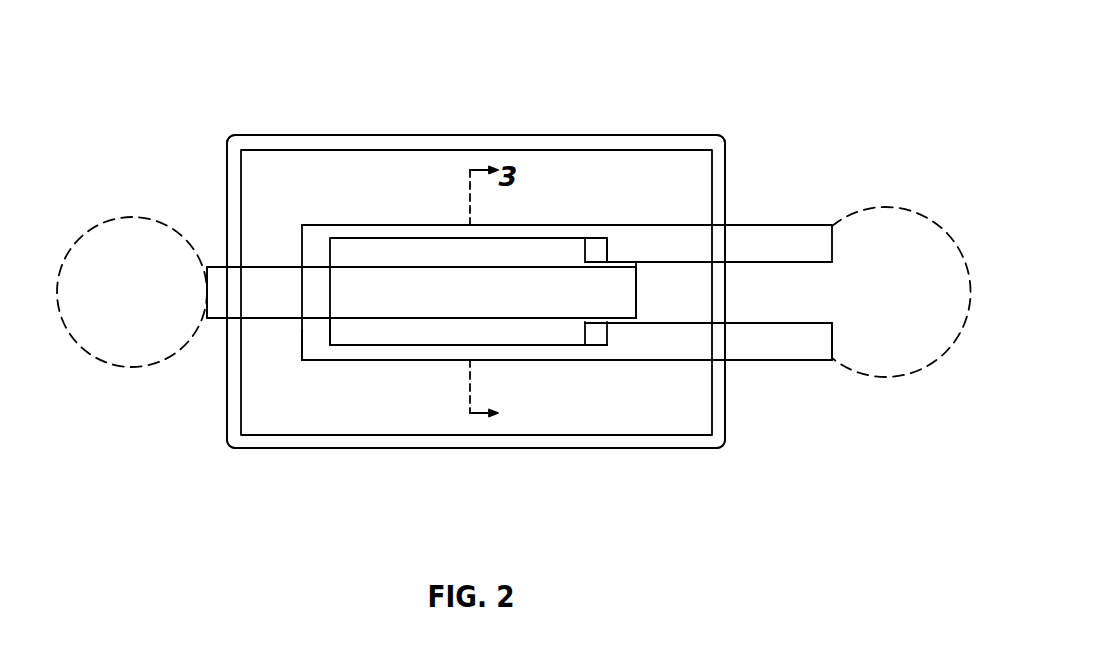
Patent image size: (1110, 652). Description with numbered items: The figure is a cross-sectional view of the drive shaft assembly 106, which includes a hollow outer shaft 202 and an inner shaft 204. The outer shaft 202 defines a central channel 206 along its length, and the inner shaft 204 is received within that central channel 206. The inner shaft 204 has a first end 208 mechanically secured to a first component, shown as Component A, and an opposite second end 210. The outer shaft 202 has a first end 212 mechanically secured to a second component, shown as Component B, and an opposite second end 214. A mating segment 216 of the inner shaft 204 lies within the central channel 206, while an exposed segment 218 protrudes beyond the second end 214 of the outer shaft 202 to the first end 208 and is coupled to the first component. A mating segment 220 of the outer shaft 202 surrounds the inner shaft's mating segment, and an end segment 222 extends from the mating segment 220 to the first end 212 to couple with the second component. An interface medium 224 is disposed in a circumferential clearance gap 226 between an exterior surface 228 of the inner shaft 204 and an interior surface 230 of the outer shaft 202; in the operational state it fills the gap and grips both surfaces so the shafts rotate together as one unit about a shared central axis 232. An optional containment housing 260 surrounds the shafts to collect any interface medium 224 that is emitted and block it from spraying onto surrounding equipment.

The drive shaft assembly 106 is at (333, 73).
The outer shaft 202 is at (405, 235).
The inner shaft 204 is at (262, 272).
The central channel 206 is at (750, 276).
The first end 208 is at (205, 274).
The second end 210 is at (638, 278).
The first end 212 is at (838, 337).
The second end 214 is at (298, 353).
The mating segment 216 is at (437, 307).
The exposed segment 218 is at (270, 307).
The mating segment 220 is at (532, 352).
The end segment 222 is at (757, 350).
The interface medium 224 is at (613, 262).
The circumferential clearance gap 226 is at (620, 328).
The exterior surface 228 is at (587, 320).
The interior surface 230 is at (646, 323).
The central axis 232 is at (683, 290).
The containment housing 260 is at (512, 145).